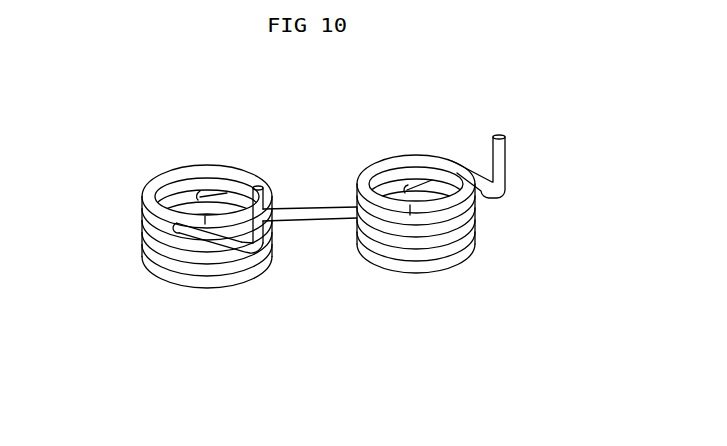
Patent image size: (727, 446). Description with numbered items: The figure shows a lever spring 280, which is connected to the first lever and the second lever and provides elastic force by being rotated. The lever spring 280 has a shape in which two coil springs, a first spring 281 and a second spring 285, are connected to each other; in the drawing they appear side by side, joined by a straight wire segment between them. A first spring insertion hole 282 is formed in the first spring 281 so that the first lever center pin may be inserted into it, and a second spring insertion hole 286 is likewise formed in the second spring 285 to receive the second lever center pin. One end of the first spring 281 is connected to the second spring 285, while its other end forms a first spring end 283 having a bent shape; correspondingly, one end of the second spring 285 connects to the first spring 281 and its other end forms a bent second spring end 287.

The lever spring 280 is at (352, 310).
The first spring 281 is at (145, 230).
The first spring insertion hole 282 is at (203, 190).
The first spring end 283 is at (270, 223).
The second spring 285 is at (458, 232).
The second spring insertion hole 286 is at (415, 180).
The second spring end 287 is at (503, 150).